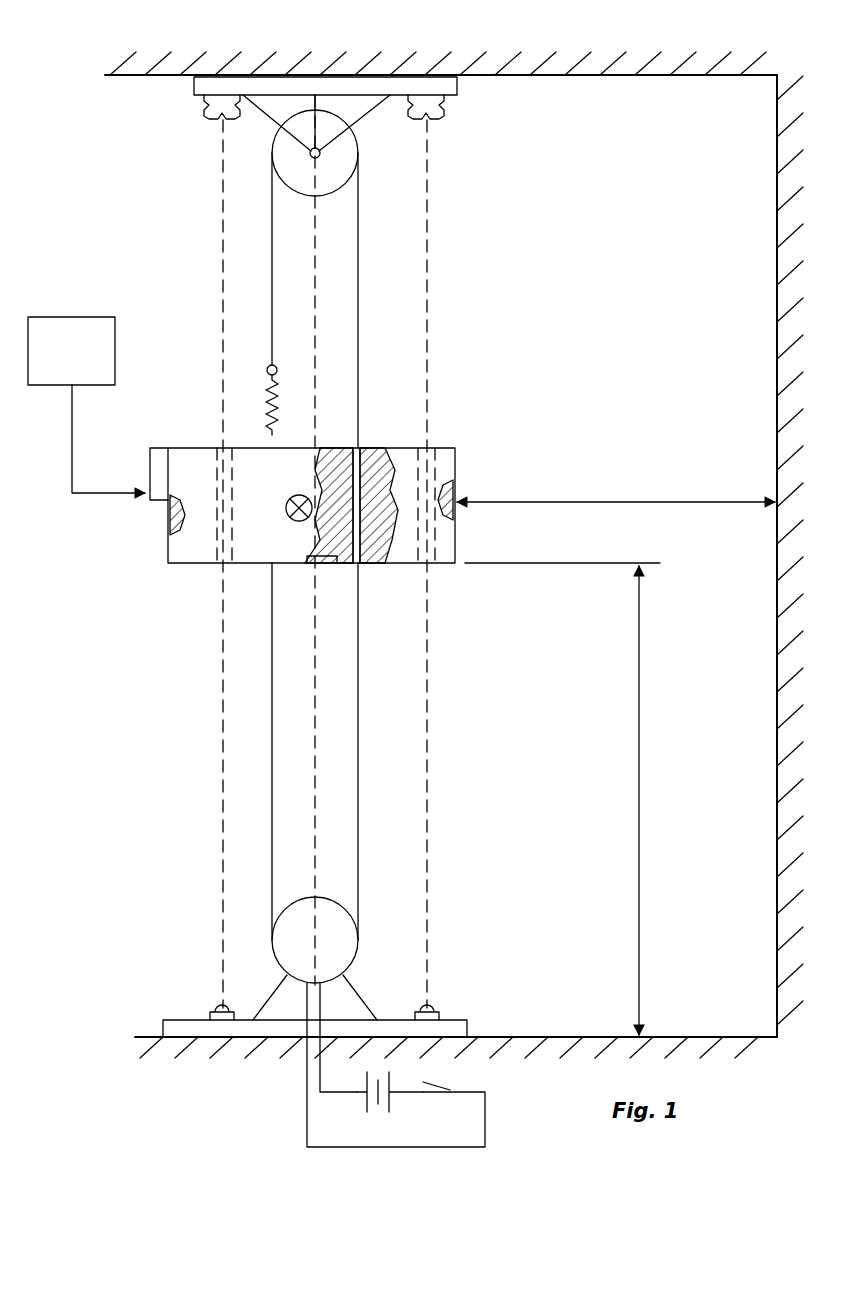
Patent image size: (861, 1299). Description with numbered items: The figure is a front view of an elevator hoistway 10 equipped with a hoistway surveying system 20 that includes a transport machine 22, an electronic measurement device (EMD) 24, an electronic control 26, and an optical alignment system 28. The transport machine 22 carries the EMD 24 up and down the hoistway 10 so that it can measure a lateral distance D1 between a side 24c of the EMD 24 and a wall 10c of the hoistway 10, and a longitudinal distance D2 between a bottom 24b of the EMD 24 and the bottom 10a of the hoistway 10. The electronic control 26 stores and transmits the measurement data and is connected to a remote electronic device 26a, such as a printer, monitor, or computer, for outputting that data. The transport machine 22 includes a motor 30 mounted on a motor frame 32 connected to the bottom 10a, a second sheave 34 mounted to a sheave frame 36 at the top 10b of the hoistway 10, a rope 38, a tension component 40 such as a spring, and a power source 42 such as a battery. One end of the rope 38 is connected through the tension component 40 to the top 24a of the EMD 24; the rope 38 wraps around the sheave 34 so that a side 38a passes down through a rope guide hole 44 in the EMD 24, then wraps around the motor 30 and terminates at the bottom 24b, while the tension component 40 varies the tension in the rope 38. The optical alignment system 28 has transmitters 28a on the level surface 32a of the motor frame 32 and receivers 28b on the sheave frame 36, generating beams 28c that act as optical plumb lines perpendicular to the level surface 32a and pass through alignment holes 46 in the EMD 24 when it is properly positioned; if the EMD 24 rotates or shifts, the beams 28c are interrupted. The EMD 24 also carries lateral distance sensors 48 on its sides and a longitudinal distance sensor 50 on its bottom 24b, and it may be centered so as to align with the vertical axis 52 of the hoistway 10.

The elevator hoistway 10 is at (626, 280).
The bottom of the hoistway 10a is at (688, 1035).
The top of the hoistway 10b is at (667, 77).
The wall of the hoistway 10c is at (777, 676).
The hoistway surveying system 20 is at (210, 385).
The transport machine 22 is at (270, 935).
The electronic measurement device 24 is at (460, 455).
The top of the EMD 24a is at (212, 448).
The bottom of the EMD 24b is at (186, 563).
The side of the EMD 24c is at (457, 545).
The electronic control 26 is at (145, 482).
The remote electronic device 26a is at (72, 317).
The optical alignment system 28 is at (208, 1014).
The transmitters 28a is at (215, 1005).
The receivers 28b is at (234, 100).
The beams 28c is at (223, 740).
The motor 30 is at (343, 925).
The motor frame 32 is at (468, 1022).
The level surface 32a is at (448, 1020).
The second sheave 34 is at (345, 153).
The sheave frame 36 is at (458, 85).
The rope 38 is at (268, 268).
The side of the rope 38a is at (360, 268).
The tension component 40 is at (278, 395).
The power source 42 is at (485, 1102).
The rope guide hole 44 is at (360, 448).
The alignment holes 46 is at (222, 565).
The lateral distance sensors 48 is at (290, 498).
The longitudinal distance sensor 50 is at (327, 562).
The vertical axis of the hoistway 52 is at (315, 213).
The lateral distance D1 is at (632, 500).
The longitudinal distance D2 is at (640, 725).